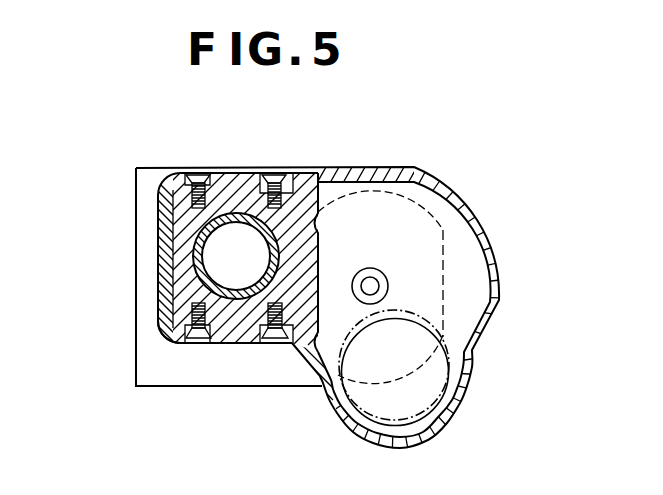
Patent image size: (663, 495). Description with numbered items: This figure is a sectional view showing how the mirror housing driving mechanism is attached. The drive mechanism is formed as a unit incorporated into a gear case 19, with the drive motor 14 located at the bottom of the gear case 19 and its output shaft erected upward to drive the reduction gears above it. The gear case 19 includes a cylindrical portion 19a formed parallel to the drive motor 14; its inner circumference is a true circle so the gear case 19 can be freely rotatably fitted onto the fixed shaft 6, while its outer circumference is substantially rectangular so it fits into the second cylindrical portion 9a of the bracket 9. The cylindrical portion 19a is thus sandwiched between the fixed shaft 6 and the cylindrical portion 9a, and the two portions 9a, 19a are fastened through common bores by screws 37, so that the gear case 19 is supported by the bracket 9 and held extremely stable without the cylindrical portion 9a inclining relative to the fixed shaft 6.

The fixed shaft 6 is at (236, 212).
The bracket 9 is at (157, 303).
The second cylindrical portion 9a is at (162, 332).
The drive motor 14 is at (443, 230).
The gear case 19 is at (442, 186).
The cylindrical portion 19a is at (182, 276).
The screws 37 is at (196, 173).